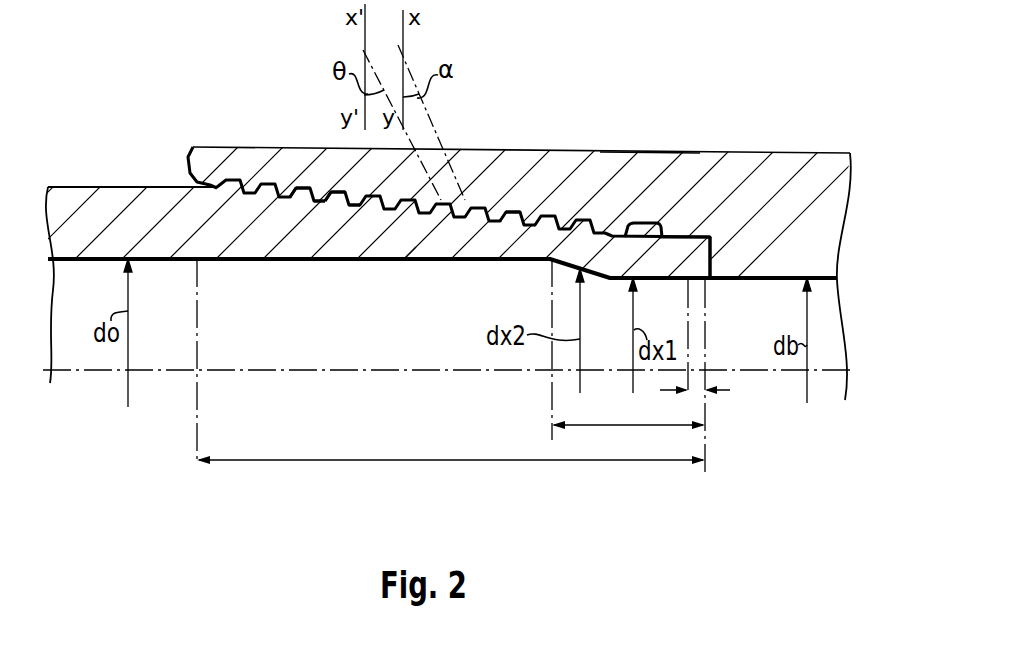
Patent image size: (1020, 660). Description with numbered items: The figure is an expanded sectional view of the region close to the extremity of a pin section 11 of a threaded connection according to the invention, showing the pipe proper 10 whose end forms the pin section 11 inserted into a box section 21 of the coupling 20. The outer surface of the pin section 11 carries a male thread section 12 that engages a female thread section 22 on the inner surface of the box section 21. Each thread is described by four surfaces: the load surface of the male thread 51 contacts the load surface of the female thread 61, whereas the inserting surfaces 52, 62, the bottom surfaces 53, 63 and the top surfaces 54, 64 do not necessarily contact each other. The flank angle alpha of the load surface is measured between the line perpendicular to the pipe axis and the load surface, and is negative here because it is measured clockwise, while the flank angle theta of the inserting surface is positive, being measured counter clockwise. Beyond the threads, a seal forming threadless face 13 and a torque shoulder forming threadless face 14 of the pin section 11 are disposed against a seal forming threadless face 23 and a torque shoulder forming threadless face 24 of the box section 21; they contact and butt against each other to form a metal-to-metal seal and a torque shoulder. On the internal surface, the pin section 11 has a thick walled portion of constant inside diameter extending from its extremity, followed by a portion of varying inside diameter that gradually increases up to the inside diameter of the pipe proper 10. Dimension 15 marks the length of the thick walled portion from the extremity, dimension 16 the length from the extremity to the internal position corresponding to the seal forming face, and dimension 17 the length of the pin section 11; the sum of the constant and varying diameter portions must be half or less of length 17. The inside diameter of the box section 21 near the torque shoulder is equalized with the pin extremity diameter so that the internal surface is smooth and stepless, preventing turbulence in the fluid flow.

The pipe 10 is at (73, 187).
The pin section 11 is at (405, 260).
The male thread section 12 is at (522, 226).
The seal forming threadless face 13 is at (652, 268).
The torque shoulder forming threadless face 14 is at (707, 267).
The length of thick walled portion 15 is at (663, 427).
The length to seal forming face position 16 is at (697, 393).
The length of pin section 17 is at (417, 461).
The sleeve 20 is at (797, 153).
The box section 21 is at (660, 163).
The female thread section 22 is at (498, 213).
The seal forming threadless face of the box section 23 is at (682, 240).
The torque shoulder forming threadless face of the box section 24 is at (750, 280).
The load surface of a male thread 51 is at (292, 199).
The inserting surface of a male thread 52 is at (328, 199).
The bottom surface of a male thread 53 is at (291, 199).
The top surface of a male thread 54 is at (350, 197).
The load surface of a female thread 61 is at (277, 134).
The inserting surface of a female thread 62 is at (318, 136).
The bottom surface of a female thread 63 is at (300, 263).
The top surface of a female thread 64 is at (341, 259).